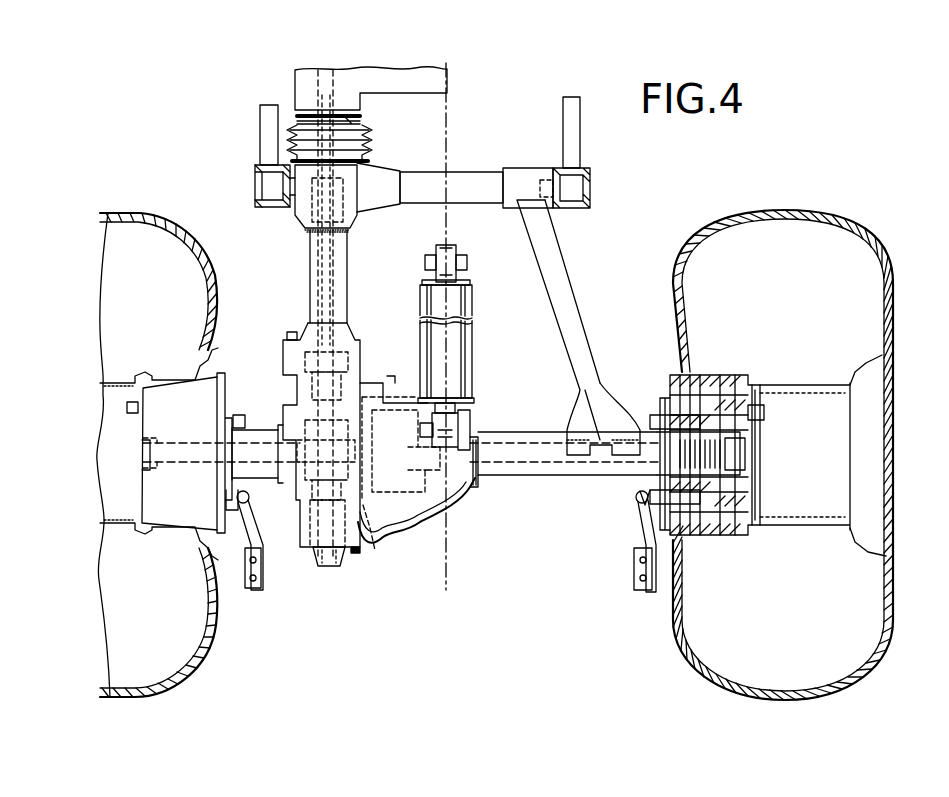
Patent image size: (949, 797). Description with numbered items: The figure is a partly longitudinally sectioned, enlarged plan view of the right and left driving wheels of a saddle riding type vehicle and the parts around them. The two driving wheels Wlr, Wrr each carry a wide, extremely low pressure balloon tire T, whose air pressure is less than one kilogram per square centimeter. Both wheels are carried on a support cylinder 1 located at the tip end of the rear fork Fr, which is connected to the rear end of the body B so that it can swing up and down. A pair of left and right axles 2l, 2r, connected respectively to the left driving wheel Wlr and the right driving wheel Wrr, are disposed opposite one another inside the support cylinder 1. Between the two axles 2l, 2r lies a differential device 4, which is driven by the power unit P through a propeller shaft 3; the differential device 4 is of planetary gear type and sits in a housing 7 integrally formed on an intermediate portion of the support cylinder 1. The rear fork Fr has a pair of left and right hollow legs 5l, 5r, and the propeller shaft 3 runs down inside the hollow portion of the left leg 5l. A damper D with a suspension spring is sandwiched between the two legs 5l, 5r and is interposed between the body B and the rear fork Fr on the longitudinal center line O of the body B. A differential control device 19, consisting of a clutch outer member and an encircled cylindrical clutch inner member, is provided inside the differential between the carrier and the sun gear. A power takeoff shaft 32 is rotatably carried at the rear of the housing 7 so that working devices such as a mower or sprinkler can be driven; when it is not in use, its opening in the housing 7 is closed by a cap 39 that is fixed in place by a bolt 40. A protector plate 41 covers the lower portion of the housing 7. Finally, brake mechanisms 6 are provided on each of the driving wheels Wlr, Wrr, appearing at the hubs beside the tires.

The longitudinal center line O is at (448, 145).
The tire T is at (127, 216).
The left driving wheel Wlr is at (92, 368).
The right driving wheel Wrr is at (882, 352).
The power unit P is at (295, 80).
The left leg 5l is at (310, 273).
The propeller shaft 3 is at (345, 254).
The body B is at (260, 140).
The rear fork Fr is at (569, 272).
The right leg 5r is at (546, 285).
The damper D is at (481, 349).
The housing 7 is at (364, 386).
The protector plate 41 is at (393, 528).
The differential device 4 is at (373, 540).
The differential control device 19 is at (408, 497).
The power takeoff shaft 32 is at (320, 534).
The cap 39 is at (318, 558).
The bolt 40 is at (355, 553).
The left axle 2l is at (262, 444).
The right axle 2r is at (526, 446).
The support cylinder 1 is at (266, 479).
The brake mechanism 6 is at (205, 387).